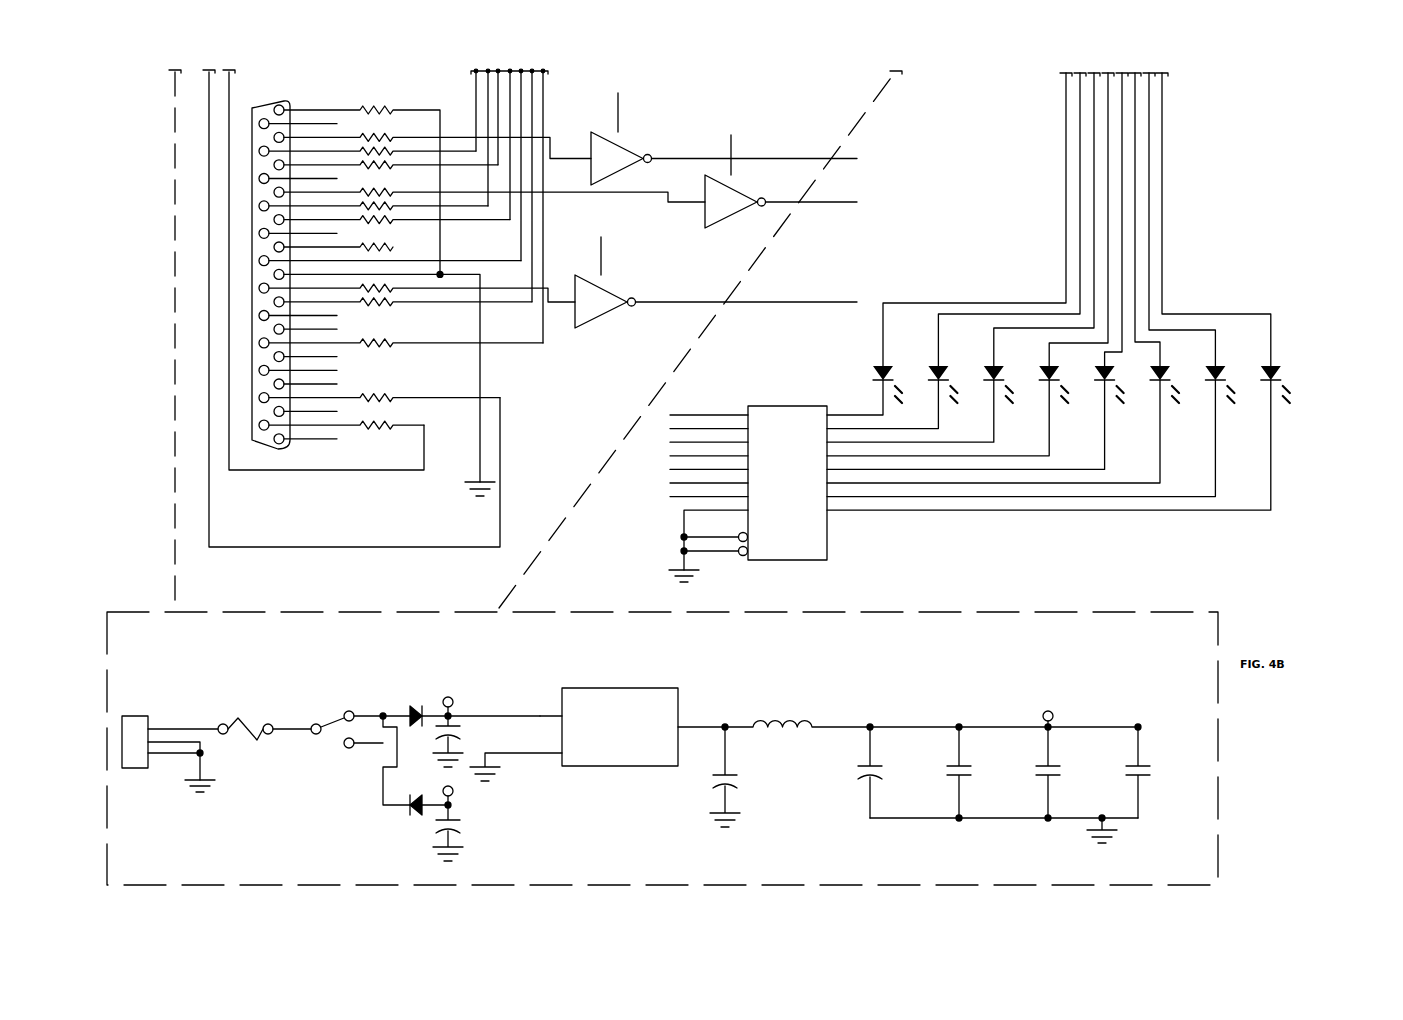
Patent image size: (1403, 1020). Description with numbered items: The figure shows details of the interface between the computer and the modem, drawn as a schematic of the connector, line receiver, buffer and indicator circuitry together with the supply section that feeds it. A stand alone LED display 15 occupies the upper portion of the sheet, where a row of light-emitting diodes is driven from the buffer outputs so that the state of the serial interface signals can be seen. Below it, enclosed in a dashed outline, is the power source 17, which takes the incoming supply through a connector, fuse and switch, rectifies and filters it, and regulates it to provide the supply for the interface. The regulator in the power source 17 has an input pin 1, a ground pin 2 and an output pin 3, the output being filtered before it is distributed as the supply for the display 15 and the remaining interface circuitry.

The stand alone LED display 15 is at (969, 266).
The power source 17 is at (1179, 683).
The voltage regulator input pin 1 is at (551, 708).
The voltage regulator ground pin 2 is at (516, 760).
The voltage regulator output pin 3 is at (701, 719).